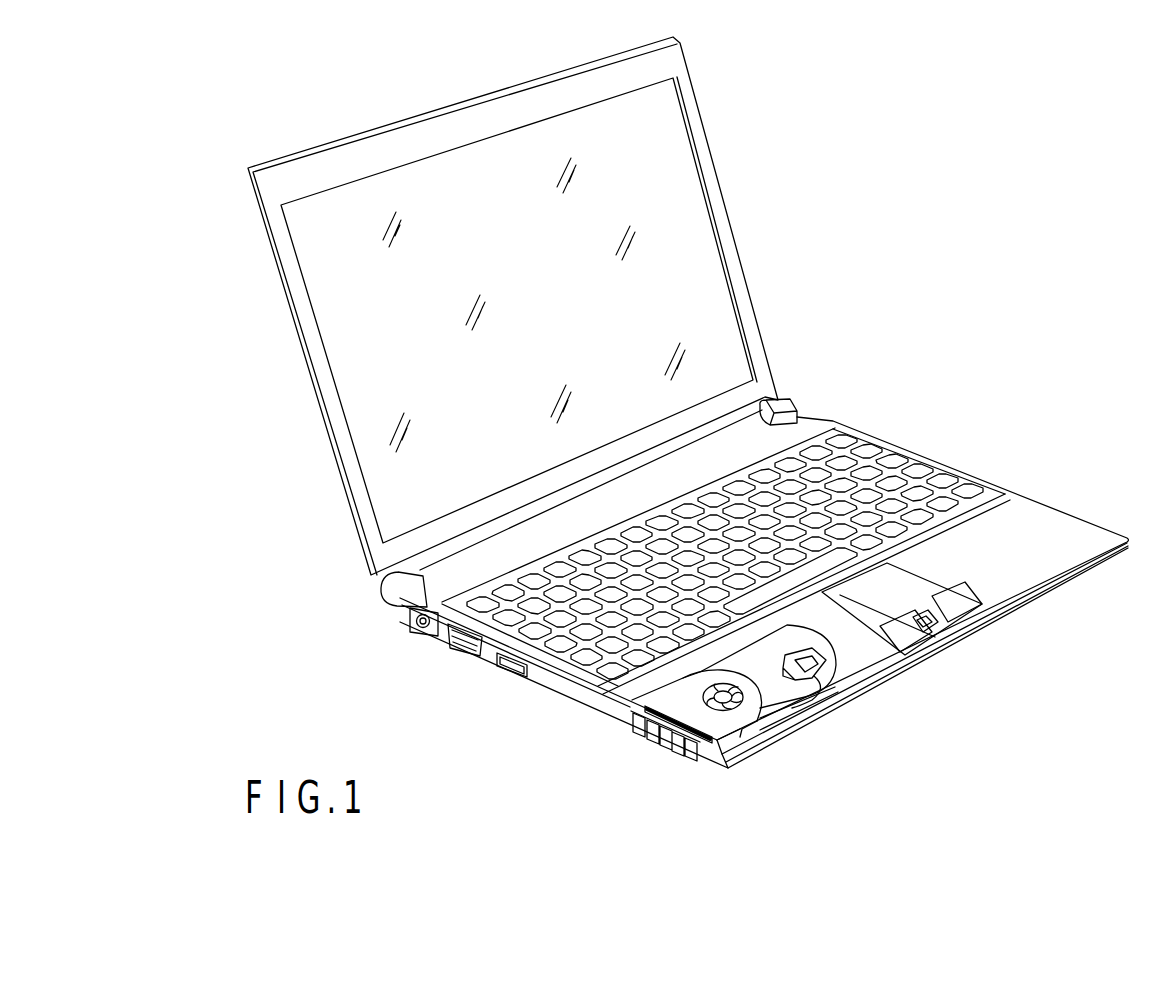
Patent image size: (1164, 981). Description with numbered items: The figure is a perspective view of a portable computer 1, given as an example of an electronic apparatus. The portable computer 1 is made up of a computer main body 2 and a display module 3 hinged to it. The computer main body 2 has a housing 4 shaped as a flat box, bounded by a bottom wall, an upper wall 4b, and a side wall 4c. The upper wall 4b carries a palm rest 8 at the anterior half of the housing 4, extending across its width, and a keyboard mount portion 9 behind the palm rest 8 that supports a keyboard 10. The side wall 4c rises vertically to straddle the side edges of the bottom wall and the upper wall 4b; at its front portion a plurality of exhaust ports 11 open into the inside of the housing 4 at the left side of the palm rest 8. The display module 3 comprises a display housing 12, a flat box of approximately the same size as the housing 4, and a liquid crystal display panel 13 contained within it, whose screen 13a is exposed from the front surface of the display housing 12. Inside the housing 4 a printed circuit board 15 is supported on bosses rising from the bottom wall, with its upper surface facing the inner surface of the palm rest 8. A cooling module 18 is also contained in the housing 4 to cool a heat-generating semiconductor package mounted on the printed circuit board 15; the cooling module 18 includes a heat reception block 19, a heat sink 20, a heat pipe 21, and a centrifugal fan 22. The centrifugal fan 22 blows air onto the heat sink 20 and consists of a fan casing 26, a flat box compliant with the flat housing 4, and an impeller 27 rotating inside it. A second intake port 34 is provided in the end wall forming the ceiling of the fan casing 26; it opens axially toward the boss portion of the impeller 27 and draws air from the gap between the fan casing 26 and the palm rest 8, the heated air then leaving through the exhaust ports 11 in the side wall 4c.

The portable computer 1 is at (752, 157).
The computer main body 2 is at (487, 667).
The display module 3 is at (313, 149).
The housing 4 is at (1062, 508).
The upper wall 4b is at (807, 422).
The side wall 4c is at (562, 692).
The palm rest 8 is at (993, 580).
The keyboard mount portion 9 is at (920, 537).
The keyboard 10 is at (865, 465).
The exhaust ports 11 is at (673, 747).
The display housing 12 is at (320, 408).
The liquid crystal display panel 13 is at (700, 270).
The screen 13a is at (534, 305).
The printed circuit board 15 is at (790, 640).
The cooling module 18 is at (760, 735).
The heat reception block 19 is at (812, 657).
The heat sink 20 is at (692, 757).
The heat pipe 21 is at (792, 710).
The centrifugal fan 22 is at (725, 676).
The fan casing 26 is at (752, 703).
The impeller 27 is at (737, 707).
The second intake port 34 is at (643, 703).